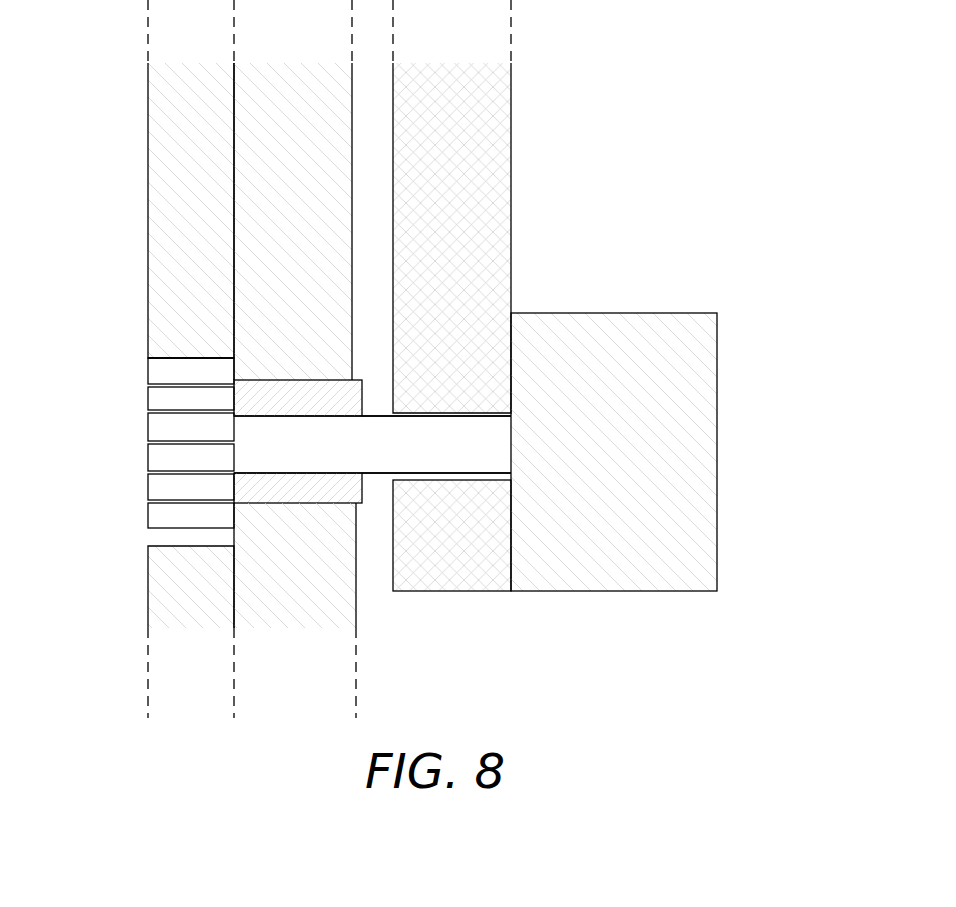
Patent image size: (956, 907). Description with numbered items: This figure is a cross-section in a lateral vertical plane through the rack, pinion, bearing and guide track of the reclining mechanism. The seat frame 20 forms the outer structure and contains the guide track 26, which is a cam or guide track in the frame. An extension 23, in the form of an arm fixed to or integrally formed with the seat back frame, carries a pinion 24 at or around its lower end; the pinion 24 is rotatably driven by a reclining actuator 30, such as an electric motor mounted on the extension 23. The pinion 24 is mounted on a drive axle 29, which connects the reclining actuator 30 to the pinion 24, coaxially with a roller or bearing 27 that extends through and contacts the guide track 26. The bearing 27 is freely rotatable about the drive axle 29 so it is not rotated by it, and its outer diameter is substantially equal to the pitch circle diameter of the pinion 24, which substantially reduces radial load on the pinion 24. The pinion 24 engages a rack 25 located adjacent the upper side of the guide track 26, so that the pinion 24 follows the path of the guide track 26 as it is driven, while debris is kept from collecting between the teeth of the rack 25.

The seat frame 20 is at (153, 133).
The extension 23 is at (505, 108).
The pinion 24 is at (153, 428).
The rack 25 is at (165, 356).
The guide track 26 is at (312, 503).
The bearing 27 is at (263, 495).
The drive axle 29 is at (450, 462).
The reclining actuator 30 is at (710, 328).